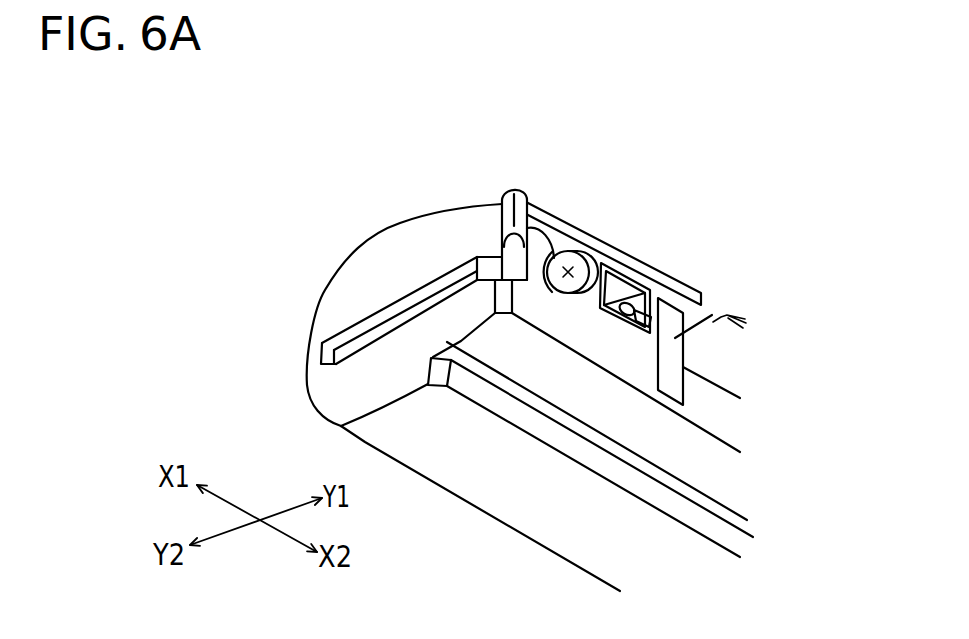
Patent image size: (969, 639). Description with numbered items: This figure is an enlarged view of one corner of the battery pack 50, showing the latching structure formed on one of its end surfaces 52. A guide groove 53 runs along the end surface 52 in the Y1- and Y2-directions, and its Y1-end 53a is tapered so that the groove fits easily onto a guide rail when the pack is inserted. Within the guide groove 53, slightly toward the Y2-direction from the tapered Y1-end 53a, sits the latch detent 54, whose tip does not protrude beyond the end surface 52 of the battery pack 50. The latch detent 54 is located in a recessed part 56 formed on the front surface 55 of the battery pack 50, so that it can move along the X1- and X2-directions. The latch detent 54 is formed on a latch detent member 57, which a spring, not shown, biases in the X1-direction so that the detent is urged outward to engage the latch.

The battery pack 50 is at (722, 108).
The end surface 52 is at (365, 284).
The guide groove 53 is at (353, 336).
The Y1-end of the guide groove 53a is at (540, 228).
The latch detent 54 is at (501, 243).
The front surface 55 is at (735, 368).
The recessed part 56 is at (690, 322).
The latch detent member 57 is at (623, 352).